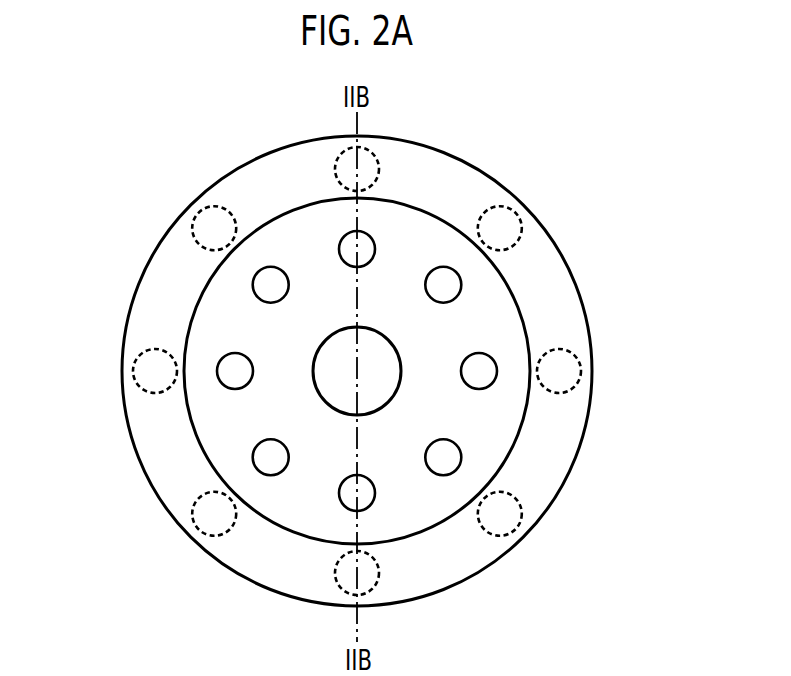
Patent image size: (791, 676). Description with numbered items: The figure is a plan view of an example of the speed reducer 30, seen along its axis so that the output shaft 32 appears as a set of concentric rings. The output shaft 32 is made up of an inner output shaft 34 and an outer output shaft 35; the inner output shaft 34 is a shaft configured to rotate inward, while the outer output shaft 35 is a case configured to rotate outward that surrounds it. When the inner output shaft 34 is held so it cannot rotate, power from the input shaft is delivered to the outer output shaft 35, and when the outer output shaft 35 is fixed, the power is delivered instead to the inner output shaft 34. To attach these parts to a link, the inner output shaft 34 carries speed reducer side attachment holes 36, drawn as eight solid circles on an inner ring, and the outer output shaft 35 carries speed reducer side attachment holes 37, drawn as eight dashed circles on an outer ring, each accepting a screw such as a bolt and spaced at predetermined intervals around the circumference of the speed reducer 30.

The speed reducer 30 is at (142, 228).
The output shaft 32 is at (667, 145).
The inner output shaft 34 is at (482, 313).
The outer output shaft 35 is at (468, 198).
The speed reducer side attachment hole 36 is at (465, 453).
The speed reducer side attachment hole 37 is at (522, 510).